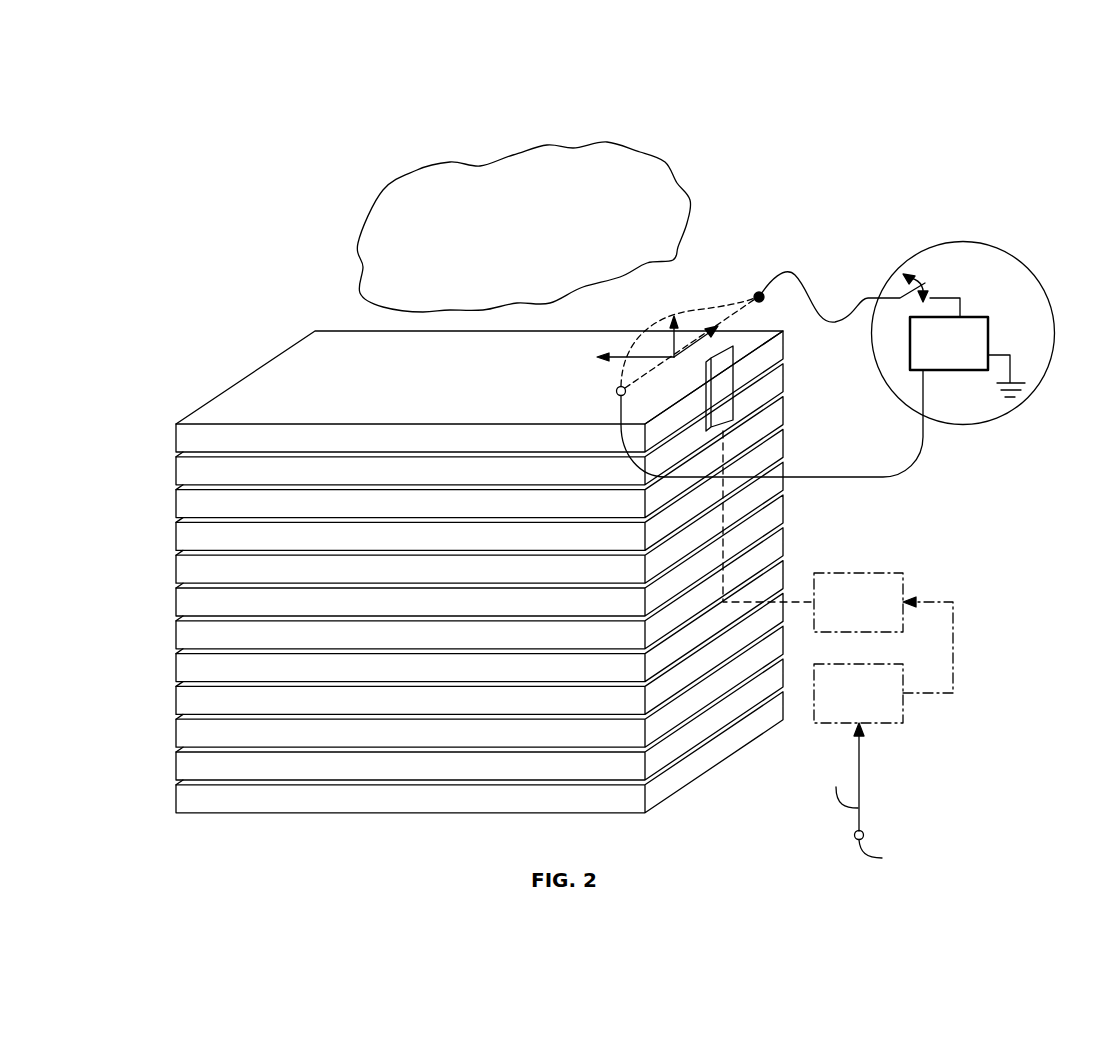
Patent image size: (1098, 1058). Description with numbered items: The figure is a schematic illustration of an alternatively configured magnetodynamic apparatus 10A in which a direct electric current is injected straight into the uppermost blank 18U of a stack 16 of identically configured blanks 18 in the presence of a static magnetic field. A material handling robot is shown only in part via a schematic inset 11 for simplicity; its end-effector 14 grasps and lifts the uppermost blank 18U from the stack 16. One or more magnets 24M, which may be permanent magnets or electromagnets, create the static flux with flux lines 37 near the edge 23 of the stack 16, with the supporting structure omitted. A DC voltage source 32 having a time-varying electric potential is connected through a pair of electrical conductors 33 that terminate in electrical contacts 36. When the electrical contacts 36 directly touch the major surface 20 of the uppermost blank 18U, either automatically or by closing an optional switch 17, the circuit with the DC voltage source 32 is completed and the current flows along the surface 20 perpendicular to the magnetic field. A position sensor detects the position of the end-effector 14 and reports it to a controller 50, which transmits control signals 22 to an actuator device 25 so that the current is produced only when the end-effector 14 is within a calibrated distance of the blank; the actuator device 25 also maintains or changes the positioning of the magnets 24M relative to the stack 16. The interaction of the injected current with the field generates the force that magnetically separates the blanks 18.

The magnetodynamic apparatus 10A is at (912, 160).
The schematic inset 11 is at (523, 227).
The end-effector 14 is at (963, 315).
The stack 16 is at (336, 274).
The switch 17 is at (925, 280).
The uppermost blank 18U is at (479, 391).
The blanks 18 is at (479, 572).
The major surface 20 is at (290, 372).
The control signals 22 is at (953, 647).
The edge 23 is at (699, 775).
The magnets 24M is at (733, 405).
The actuator device 25 is at (858, 602).
The DC voltage source 32 is at (977, 317).
The electrical conductors 33 is at (836, 320).
The electrical contacts 36 is at (760, 292).
The flux lines 37 is at (719, 306).
The controller 50 is at (858, 693).